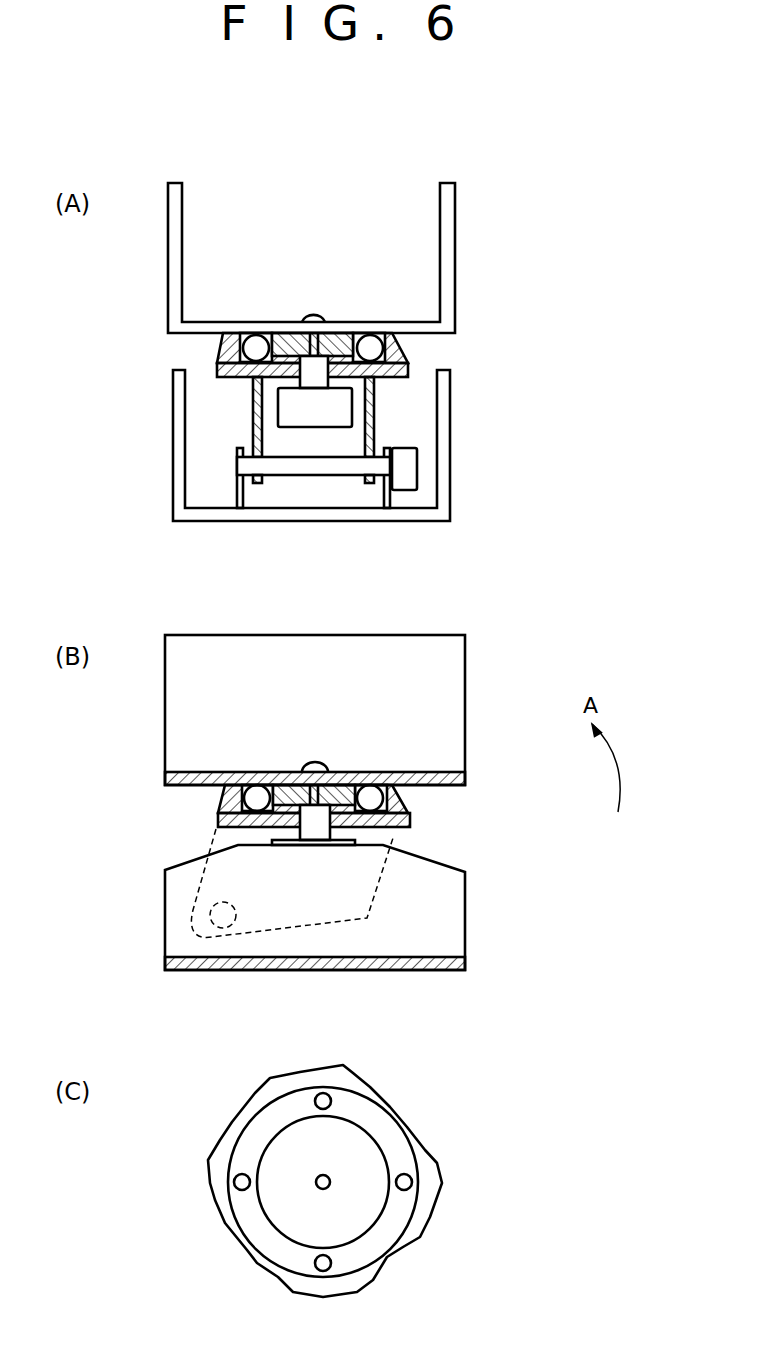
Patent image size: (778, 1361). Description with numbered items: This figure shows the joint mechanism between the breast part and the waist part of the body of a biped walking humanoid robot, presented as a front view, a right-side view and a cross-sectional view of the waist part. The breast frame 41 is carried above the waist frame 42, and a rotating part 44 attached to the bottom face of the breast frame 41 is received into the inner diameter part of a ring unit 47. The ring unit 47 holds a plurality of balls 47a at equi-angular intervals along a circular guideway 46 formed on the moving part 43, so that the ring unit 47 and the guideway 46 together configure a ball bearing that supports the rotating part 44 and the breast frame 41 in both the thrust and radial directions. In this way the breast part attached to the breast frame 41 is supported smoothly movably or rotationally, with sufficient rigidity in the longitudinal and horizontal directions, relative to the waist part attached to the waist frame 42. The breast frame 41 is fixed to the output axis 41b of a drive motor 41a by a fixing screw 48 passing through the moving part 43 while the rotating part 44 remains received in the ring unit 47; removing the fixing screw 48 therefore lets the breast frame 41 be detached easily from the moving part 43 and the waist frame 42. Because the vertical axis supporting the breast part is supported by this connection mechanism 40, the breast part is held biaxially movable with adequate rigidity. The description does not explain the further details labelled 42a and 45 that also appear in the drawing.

The connection mechanism 40 is at (370, 737).
The breast frame 41 is at (453, 243).
The drive motor 41a is at (298, 413).
The output axis 41b is at (313, 380).
The waist frame 42 is at (450, 413).
The guide bar of second member 42a is at (305, 467).
The moving part 43 is at (410, 373).
The rotating part 44 is at (282, 350).
The stopper 45 is at (410, 473).
The circular guideway 46 is at (217, 350).
The ring unit 47 is at (352, 743).
The balls 47a is at (267, 347).
The fixing screw 48 is at (328, 729).